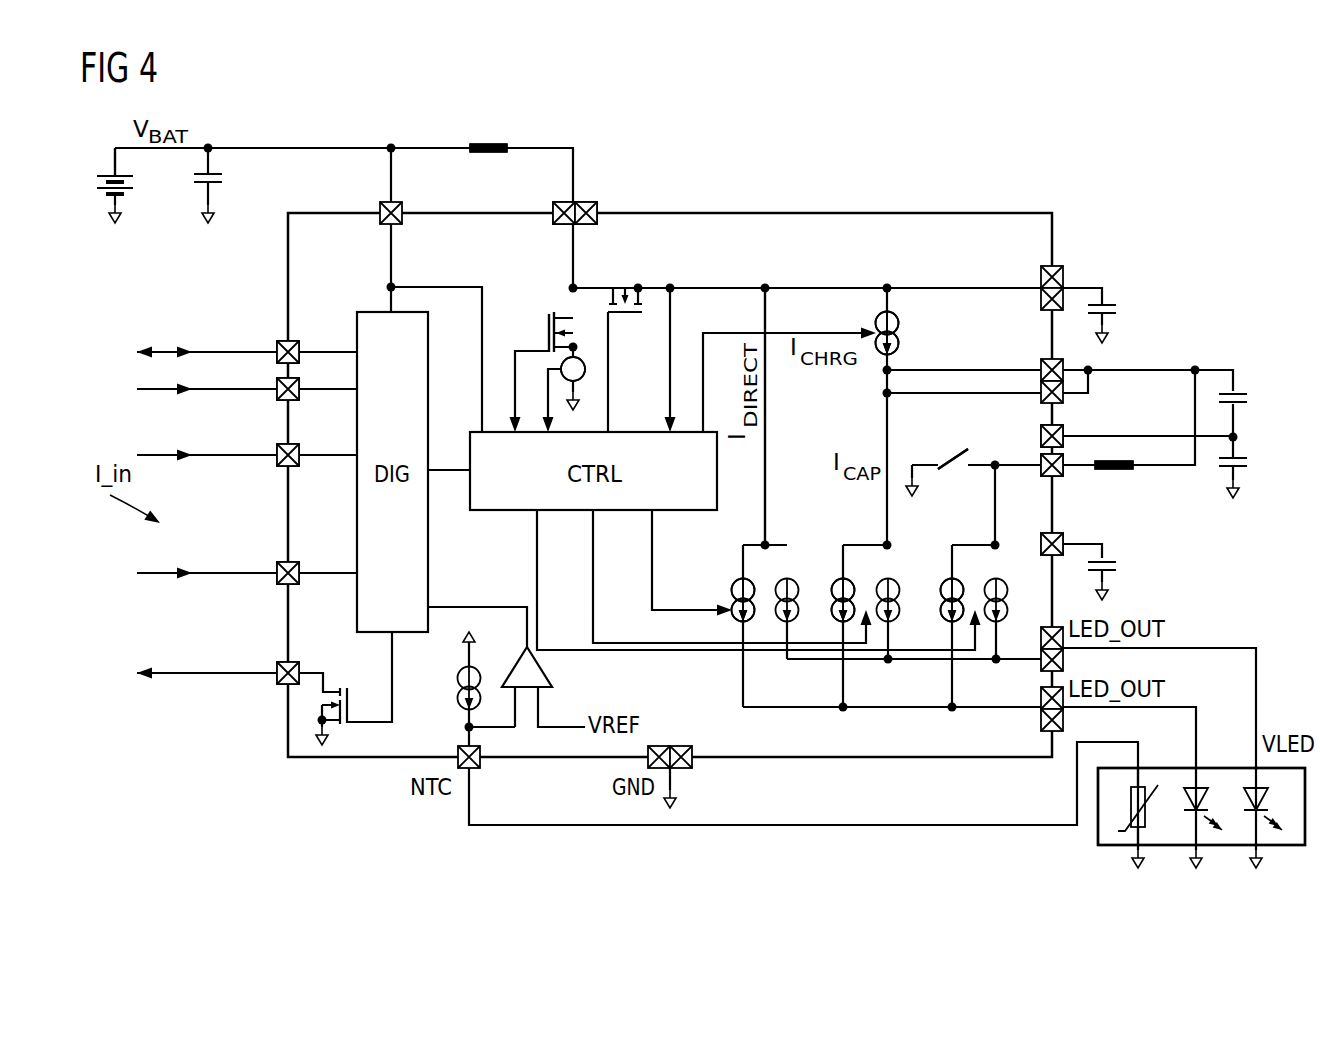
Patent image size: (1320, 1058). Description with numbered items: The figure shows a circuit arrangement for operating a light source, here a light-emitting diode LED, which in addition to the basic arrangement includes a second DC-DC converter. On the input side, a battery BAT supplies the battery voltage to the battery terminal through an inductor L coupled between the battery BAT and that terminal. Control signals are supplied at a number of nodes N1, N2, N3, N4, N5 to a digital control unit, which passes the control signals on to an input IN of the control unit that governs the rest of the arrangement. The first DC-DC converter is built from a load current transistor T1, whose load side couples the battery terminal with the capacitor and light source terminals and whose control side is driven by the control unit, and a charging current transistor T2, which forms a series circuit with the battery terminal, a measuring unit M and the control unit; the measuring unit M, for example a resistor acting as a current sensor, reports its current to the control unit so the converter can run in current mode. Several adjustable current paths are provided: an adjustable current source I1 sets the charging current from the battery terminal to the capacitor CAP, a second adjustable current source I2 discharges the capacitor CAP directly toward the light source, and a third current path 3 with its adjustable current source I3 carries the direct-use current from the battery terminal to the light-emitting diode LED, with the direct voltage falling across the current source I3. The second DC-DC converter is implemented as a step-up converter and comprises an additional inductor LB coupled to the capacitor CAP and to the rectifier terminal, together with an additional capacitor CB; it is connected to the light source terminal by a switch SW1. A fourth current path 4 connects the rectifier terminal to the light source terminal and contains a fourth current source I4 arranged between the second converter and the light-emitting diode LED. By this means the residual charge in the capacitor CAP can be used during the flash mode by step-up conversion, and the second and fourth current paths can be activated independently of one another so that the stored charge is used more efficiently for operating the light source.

The battery BAT is at (106, 174).
The inductor L is at (486, 143).
The charging current transistor T2 is at (548, 328).
The measuring unit M is at (580, 356).
The load current transistor T1 is at (628, 314).
The adjustable current source I1 is at (900, 330).
The third adjustable current path 3 is at (767, 392).
The fourth current path 4 is at (970, 543).
The switch SW1 is at (1000, 532).
The capacitor CAP is at (1260, 424).
The additional inductor LB is at (1135, 470).
The additional capacitor CB is at (1128, 567).
The light-emitting diode LED is at (1170, 768).
The input of the control unit IN is at (455, 468).
The node N1 is at (278, 362).
The node N2 is at (278, 399).
The node N3 is at (278, 465).
The node N4 is at (278, 583).
The node N5 is at (278, 683).
The third adjustable current source I3 is at (765, 624).
The second adjustable current source I2 is at (874, 624).
The fourth current source I4 is at (983, 624).